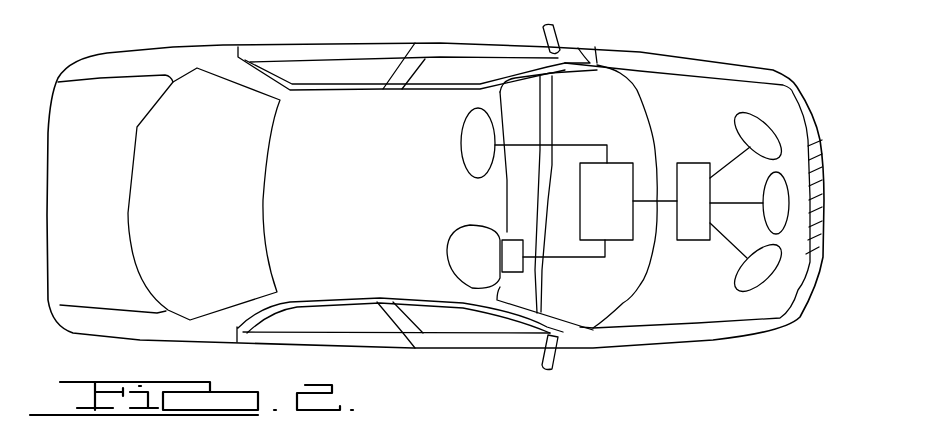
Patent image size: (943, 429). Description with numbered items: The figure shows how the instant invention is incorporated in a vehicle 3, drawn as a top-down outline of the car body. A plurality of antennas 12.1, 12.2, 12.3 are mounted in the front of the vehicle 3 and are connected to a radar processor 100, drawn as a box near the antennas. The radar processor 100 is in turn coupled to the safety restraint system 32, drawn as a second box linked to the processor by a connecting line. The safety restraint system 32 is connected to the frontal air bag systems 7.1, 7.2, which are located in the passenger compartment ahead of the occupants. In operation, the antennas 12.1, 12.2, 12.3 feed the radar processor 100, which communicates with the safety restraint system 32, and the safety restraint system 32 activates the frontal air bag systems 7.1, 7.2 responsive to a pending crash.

The vehicle 3 is at (223, 45).
The frontal air bag system 7.1 is at (463, 147).
The frontal air bag system 7.2 is at (457, 253).
The safety restraint system 32 is at (622, 233).
The radar processor 100 is at (686, 163).
The antenna 12.1 is at (758, 127).
The antenna 12.2 is at (782, 202).
The antenna 12.3 is at (750, 287).